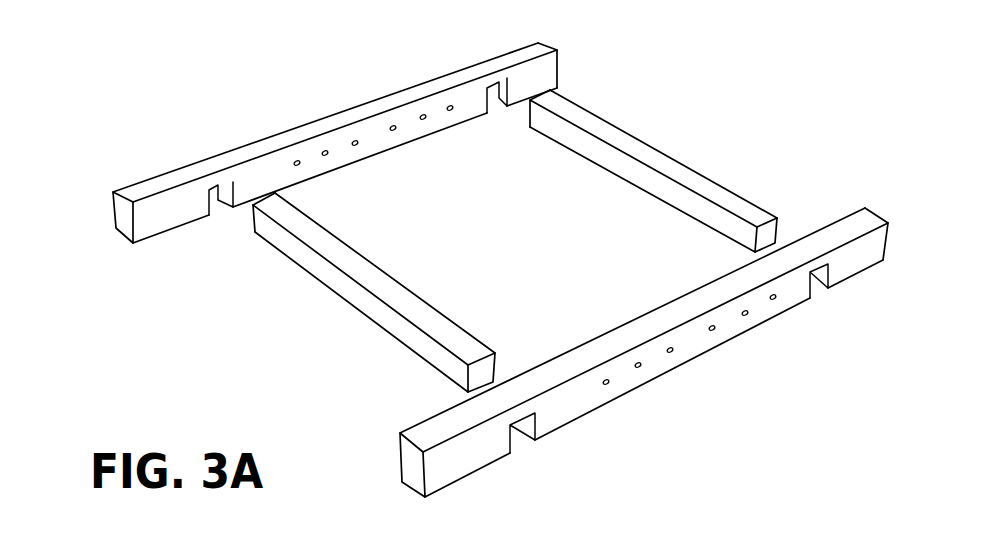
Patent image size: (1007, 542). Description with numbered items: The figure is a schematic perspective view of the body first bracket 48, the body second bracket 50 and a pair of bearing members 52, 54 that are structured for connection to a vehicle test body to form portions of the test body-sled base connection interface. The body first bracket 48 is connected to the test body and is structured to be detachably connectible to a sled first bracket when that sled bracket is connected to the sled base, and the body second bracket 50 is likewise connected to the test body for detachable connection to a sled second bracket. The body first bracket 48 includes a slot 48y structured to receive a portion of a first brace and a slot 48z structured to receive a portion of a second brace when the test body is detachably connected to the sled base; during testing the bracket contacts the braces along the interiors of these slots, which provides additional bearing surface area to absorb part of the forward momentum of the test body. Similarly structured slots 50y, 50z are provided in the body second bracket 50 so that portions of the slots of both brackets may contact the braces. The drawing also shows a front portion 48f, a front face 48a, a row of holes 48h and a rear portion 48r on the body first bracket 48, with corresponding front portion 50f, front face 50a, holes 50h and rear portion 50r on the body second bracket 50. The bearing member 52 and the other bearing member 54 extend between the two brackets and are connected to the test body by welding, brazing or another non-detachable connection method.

The body first bracket 48 is at (629, 323).
The front face of first side rail 48a is at (573, 406).
The front end of first side rail 48f is at (423, 433).
The holes in first side rail 48h is at (610, 382).
The rear end of first side rail 48r is at (880, 220).
The slot 48y is at (520, 437).
The slot 48z is at (815, 292).
The body second bracket 50 is at (317, 124).
The front face of second side rail 50a is at (368, 112).
The front end of second side rail 50f is at (123, 223).
The holes in second side rail 50h is at (424, 117).
The rear end of second side rail 50r is at (547, 42).
The slot 50y is at (214, 185).
The slot 50z is at (497, 88).
The bearing member 52 is at (345, 292).
The bearing member 54 is at (652, 143).